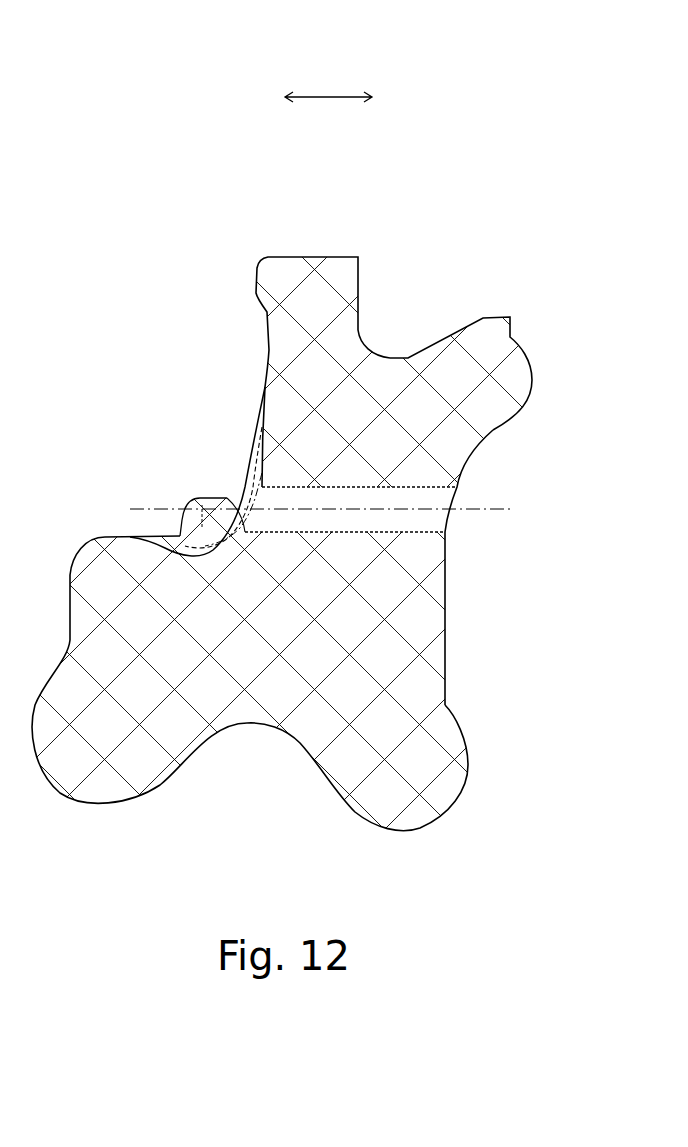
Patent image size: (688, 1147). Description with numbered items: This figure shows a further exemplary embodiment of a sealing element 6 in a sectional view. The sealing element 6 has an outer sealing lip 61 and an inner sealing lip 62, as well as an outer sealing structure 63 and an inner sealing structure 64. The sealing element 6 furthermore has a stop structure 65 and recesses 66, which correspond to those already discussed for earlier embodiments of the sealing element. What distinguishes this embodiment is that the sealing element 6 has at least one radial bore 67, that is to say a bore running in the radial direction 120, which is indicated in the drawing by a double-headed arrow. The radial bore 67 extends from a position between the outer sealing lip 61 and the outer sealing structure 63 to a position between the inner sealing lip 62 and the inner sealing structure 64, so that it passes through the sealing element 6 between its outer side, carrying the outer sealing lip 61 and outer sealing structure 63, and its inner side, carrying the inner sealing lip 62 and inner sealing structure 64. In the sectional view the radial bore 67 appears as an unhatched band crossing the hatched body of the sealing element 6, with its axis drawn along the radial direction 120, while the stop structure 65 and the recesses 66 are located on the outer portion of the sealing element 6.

The sealing element 6 is at (251, 602).
The outer sealing lip 61 is at (262, 262).
The inner sealing lip 62 is at (447, 338).
The outer sealing structure 63 is at (87, 802).
The inner sealing structure 64 is at (447, 813).
The stop structure 65 is at (210, 498).
The recesses 66 is at (216, 538).
The radial bore 67 is at (413, 508).
The radial direction 120 is at (325, 97).